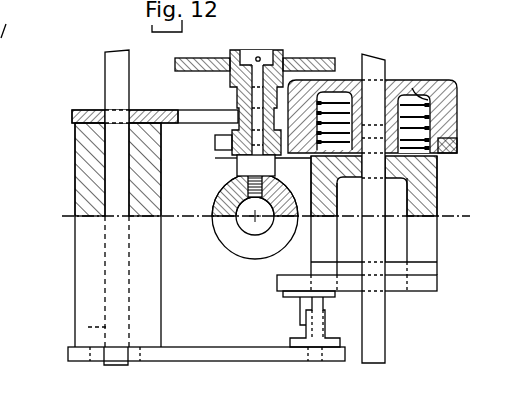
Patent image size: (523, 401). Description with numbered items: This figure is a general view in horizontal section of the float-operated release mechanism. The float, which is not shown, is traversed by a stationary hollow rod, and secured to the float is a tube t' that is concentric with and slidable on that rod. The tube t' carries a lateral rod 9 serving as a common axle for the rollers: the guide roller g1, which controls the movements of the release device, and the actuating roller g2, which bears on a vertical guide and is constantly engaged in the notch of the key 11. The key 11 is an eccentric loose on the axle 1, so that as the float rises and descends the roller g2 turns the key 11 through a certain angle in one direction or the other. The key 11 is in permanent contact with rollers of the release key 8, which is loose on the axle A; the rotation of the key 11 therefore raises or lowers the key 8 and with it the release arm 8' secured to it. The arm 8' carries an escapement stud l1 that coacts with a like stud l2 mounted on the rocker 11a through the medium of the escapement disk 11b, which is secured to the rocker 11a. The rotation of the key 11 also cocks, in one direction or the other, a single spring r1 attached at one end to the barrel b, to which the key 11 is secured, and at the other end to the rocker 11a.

The release key 8 is at (155, 104).
The release arm 8' is at (206, 340).
The lateral rod 9 is at (238, 93).
The guide roller g1 is at (272, 37).
The actuating roller g2 is at (232, 153).
The tube t' is at (248, 207).
The axle A is at (108, 325).
The barrel b is at (457, 125).
The spring r1 is at (457, 105).
The key 11 is at (457, 147).
The rocker 11a is at (437, 198).
The escapement disk 11b is at (428, 285).
The escapement stud l1 is at (326, 329).
The escapement stud l2 is at (300, 303).
The axle 1 is at (378, 342).